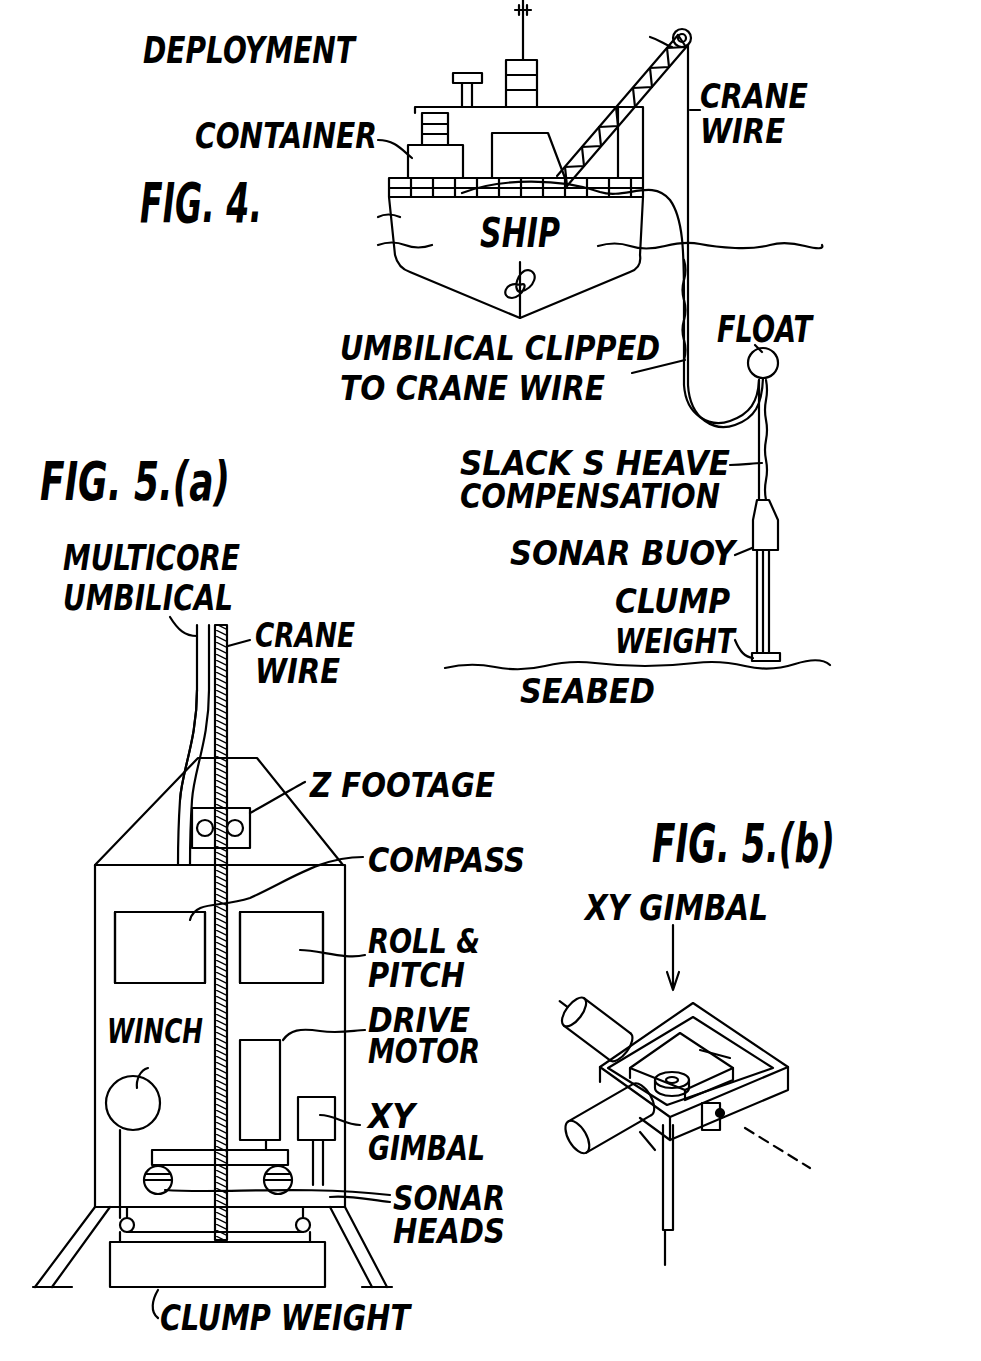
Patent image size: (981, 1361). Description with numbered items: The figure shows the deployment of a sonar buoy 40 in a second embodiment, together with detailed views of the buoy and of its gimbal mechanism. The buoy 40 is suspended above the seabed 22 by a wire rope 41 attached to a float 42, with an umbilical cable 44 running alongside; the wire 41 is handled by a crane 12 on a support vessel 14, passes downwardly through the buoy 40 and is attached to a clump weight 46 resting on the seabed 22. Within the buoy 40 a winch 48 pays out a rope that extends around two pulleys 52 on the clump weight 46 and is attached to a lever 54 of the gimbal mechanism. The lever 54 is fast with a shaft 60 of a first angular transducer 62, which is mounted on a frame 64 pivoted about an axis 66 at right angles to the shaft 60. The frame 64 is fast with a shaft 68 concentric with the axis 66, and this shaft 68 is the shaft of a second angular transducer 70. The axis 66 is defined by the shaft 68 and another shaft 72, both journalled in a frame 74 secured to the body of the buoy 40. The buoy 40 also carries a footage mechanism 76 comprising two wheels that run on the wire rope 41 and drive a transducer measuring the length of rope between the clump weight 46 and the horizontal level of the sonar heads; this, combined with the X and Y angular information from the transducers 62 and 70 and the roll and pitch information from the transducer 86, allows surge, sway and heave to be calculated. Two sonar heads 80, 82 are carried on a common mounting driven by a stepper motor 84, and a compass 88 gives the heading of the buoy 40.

In FIG. 4, the crane 12 is at (623, 83).
In FIG. 4, the support vessel 14 is at (392, 222).
In FIG. 4, the seabed 22 is at (512, 674).
In FIG. 4, the sonar buoy 40 is at (766, 510).
The sonar buoy 40 is at (180, 767).
In FIG. 4, the wire rope 41 is at (766, 398).
The wire rope 41 is at (215, 668).
In FIG. 4, the float 42 is at (778, 363).
In FIG. 4, the umbilical cable 44 is at (690, 208).
The umbilical cable 44 is at (200, 704).
In FIG. 4, the clump weight 46 is at (778, 655).
The clump weight 46 is at (128, 1278).
The winch 48 is at (113, 1087).
The pulleys 52 is at (100, 1208).
The lever 54 is at (675, 1188).
The shaft 60 is at (709, 1050).
The first angular transducer 62 is at (594, 1150).
The frame 64 is at (653, 1150).
The axis 66 is at (796, 1158).
The shaft 68 is at (605, 1085).
The second angular transducer 70 is at (583, 1008).
The shaft 72 is at (728, 1111).
The frame 74 is at (738, 1042).
The footage mechanism 76 is at (250, 840).
The sonar head 80 is at (150, 1173).
The sonar head 82 is at (277, 1163).
The stepper motor 84 is at (250, 1077).
The roll and pitch transducer 86 is at (318, 916).
The compass 88 is at (128, 930).